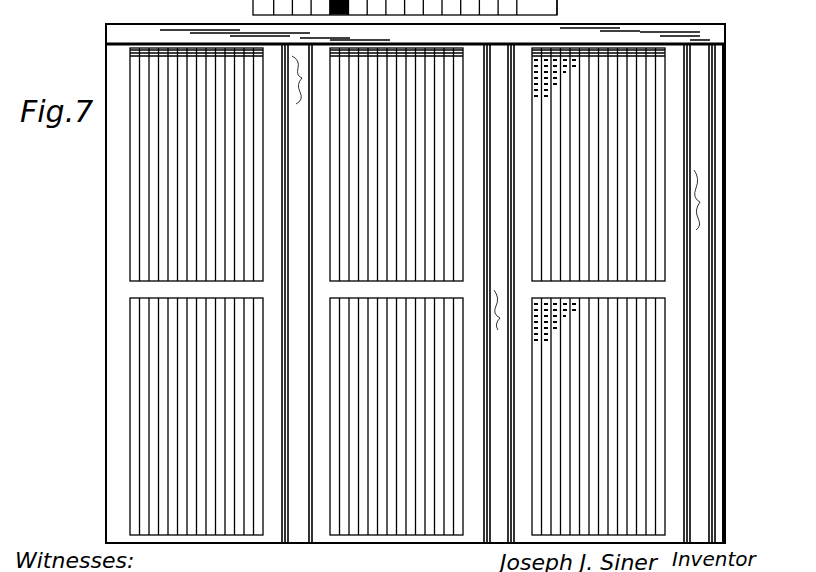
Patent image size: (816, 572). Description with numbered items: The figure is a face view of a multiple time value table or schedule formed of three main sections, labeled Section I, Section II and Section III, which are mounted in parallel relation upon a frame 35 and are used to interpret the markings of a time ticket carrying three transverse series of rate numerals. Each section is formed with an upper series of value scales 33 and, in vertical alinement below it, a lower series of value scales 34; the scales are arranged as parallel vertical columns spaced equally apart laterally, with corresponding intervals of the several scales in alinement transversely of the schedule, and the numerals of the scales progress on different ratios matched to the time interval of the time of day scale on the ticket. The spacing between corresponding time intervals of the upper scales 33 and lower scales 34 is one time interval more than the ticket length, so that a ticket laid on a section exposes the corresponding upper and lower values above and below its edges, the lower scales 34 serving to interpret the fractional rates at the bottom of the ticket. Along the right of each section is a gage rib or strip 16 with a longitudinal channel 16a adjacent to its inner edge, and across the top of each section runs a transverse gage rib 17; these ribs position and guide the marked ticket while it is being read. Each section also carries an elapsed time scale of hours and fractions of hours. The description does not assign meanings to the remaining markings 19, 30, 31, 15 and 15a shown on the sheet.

The casing frame 19 is at (141, 33).
The transverse gage rib 17 is at (608, 33).
The frame 35 is at (733, 33).
The indicator card with numbered cells 30 is at (255, 0).
The end of indicator card 31 is at (575, 7).
The upper series of value scales 33 is at (402, 172).
The lower series of value scales 34 is at (397, 416).
The gage rib 16 is at (297, 520).
The longitudinal channel 16a is at (285, 390).
The intermediate partition bar 15a is at (487, 312).
The partition bar 15 is at (495, 528).